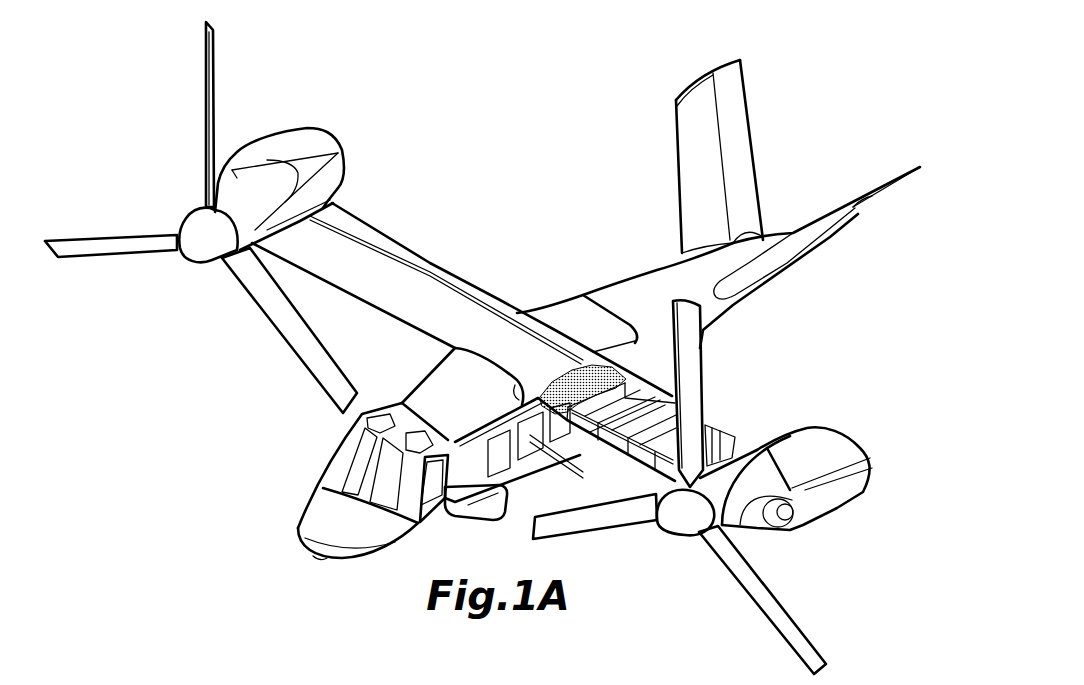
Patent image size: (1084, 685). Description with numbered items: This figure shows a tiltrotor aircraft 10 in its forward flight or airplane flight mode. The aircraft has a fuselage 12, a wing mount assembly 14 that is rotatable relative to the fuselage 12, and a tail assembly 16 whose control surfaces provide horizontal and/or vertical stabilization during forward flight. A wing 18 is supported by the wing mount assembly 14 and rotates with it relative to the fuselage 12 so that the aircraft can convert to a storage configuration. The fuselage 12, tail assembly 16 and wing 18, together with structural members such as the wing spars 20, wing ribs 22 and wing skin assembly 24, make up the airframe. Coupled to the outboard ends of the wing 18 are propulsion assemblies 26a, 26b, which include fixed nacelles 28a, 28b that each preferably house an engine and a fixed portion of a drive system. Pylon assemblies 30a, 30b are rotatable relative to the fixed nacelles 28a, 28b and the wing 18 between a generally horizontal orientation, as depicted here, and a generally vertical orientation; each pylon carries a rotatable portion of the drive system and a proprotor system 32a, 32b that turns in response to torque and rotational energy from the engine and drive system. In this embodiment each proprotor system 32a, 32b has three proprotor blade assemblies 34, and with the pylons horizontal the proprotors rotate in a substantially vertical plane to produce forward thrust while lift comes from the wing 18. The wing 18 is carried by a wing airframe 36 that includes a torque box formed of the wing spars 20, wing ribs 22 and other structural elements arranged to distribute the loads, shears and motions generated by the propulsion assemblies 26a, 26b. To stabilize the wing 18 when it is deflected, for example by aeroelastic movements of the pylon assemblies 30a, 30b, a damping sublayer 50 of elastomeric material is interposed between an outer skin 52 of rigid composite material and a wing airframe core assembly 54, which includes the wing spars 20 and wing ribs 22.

The tiltrotor aircraft 10 is at (521, 197).
The fuselage 12 is at (657, 283).
The wing mount assembly 14 is at (552, 317).
The tail assembly 16 is at (763, 137).
The wing 18 is at (373, 258).
The wing spars 20 is at (720, 450).
The wing ribs 22 is at (663, 433).
The wing skin assembly 24 is at (508, 340).
The propulsion assembly 26a is at (860, 443).
The propulsion assembly 26b is at (287, 136).
The fixed nacelle 28a is at (810, 428).
The fixed nacelle 28b is at (312, 127).
The pylon assembly 30a is at (755, 465).
The pylon assembly 30b is at (240, 200).
The proprotor system 32a is at (662, 532).
The proprotor system 32b is at (177, 253).
The proprotor blade assemblies 34 is at (72, 242).
The wing airframe 36 is at (415, 280).
The damping sublayer 50 is at (596, 372).
The outer skin 52 is at (447, 297).
The wing airframe core assembly 54 is at (610, 426).